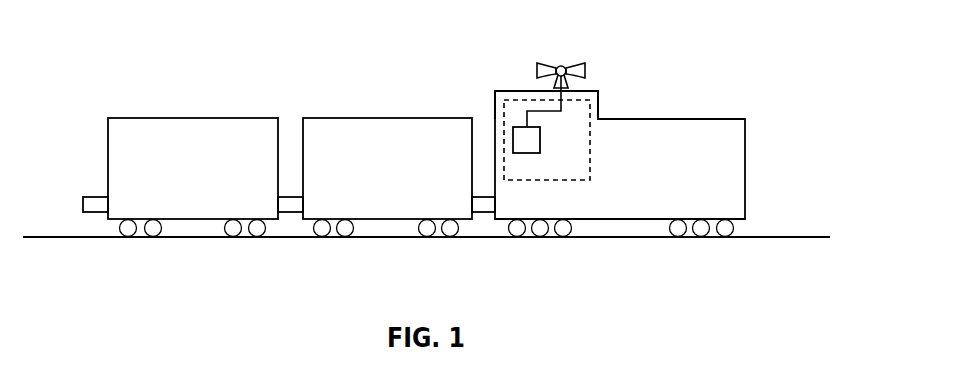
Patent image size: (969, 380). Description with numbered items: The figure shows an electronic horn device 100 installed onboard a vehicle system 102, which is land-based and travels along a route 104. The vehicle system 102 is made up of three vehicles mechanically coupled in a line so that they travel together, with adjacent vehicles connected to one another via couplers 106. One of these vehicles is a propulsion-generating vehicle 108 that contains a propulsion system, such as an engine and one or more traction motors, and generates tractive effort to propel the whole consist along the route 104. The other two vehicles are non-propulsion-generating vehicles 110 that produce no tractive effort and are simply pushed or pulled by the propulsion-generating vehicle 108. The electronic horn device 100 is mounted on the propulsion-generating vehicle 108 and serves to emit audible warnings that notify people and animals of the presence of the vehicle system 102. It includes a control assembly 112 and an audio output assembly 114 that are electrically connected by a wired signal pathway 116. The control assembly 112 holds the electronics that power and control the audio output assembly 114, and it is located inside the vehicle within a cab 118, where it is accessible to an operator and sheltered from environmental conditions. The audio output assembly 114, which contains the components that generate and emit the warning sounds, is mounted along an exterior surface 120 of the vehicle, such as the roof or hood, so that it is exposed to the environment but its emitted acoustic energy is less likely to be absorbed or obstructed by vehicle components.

The electronic horn device 100 is at (527, 47).
The vehicle system 102 is at (259, 55).
The route 104 is at (778, 238).
The couplers 106 is at (290, 203).
The propulsion-generating vehicle 108 is at (683, 130).
The non-propulsion-generating vehicles 110 is at (194, 132).
The control assembly 112 is at (527, 148).
The audio output assembly 114 is at (563, 66).
The wired signal pathway 116 is at (535, 112).
The cab 118 is at (590, 143).
The exterior surface 120 is at (592, 91).